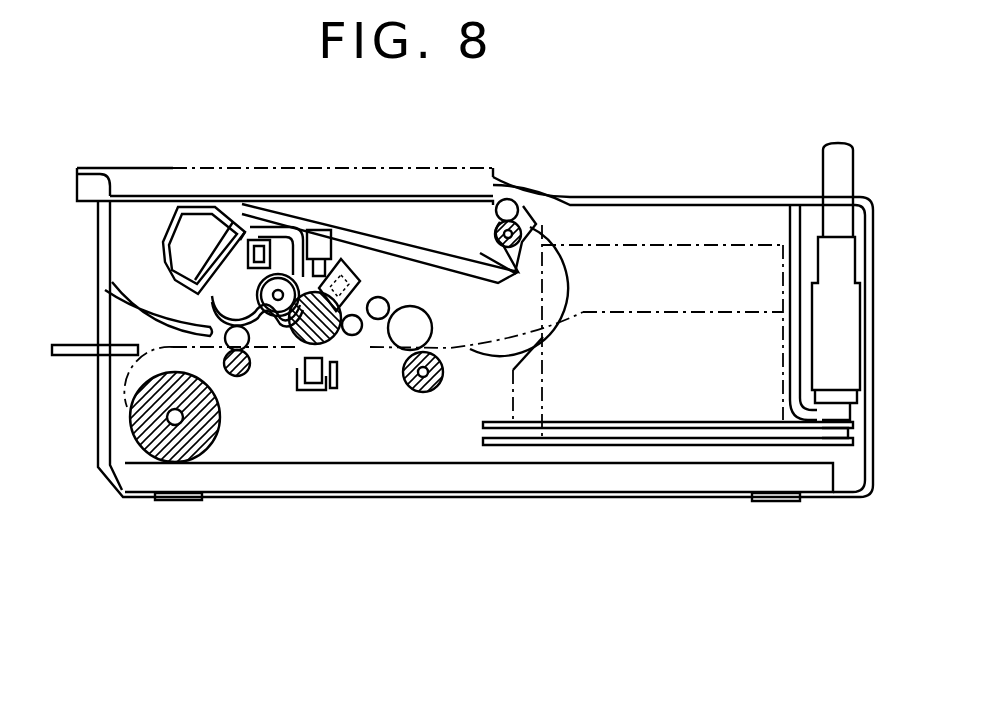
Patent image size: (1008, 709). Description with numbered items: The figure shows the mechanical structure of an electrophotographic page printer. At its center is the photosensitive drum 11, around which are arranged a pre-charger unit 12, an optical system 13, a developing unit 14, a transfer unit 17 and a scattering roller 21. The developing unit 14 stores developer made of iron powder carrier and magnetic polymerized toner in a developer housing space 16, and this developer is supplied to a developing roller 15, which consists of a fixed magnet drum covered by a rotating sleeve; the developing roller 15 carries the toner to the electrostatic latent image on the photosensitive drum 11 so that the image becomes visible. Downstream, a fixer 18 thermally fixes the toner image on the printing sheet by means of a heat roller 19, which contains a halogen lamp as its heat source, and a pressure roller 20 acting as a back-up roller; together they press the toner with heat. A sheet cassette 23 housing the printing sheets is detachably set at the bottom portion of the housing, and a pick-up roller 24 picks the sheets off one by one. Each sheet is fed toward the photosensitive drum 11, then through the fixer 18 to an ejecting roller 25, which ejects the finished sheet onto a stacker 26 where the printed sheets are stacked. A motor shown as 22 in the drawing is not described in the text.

The photosensitive drum 11 is at (350, 336).
The pre-charger unit 12 is at (343, 259).
The optical system 13 is at (312, 229).
The developing unit 14 is at (237, 225).
The developing roller 15 is at (268, 258).
The developer housing space 16 is at (187, 233).
The transfer unit 17 is at (323, 392).
The fixer 18 is at (441, 352).
The heat roller 19 is at (433, 317).
The pressure roller 20 is at (428, 393).
The scattering roller 21 is at (359, 336).
The motor 22 is at (373, 264).
The sheet cassette 23 is at (150, 477).
The pick-up roller 24 is at (133, 430).
The ejecting roller 25 is at (522, 215).
The stacker 26 is at (90, 167).